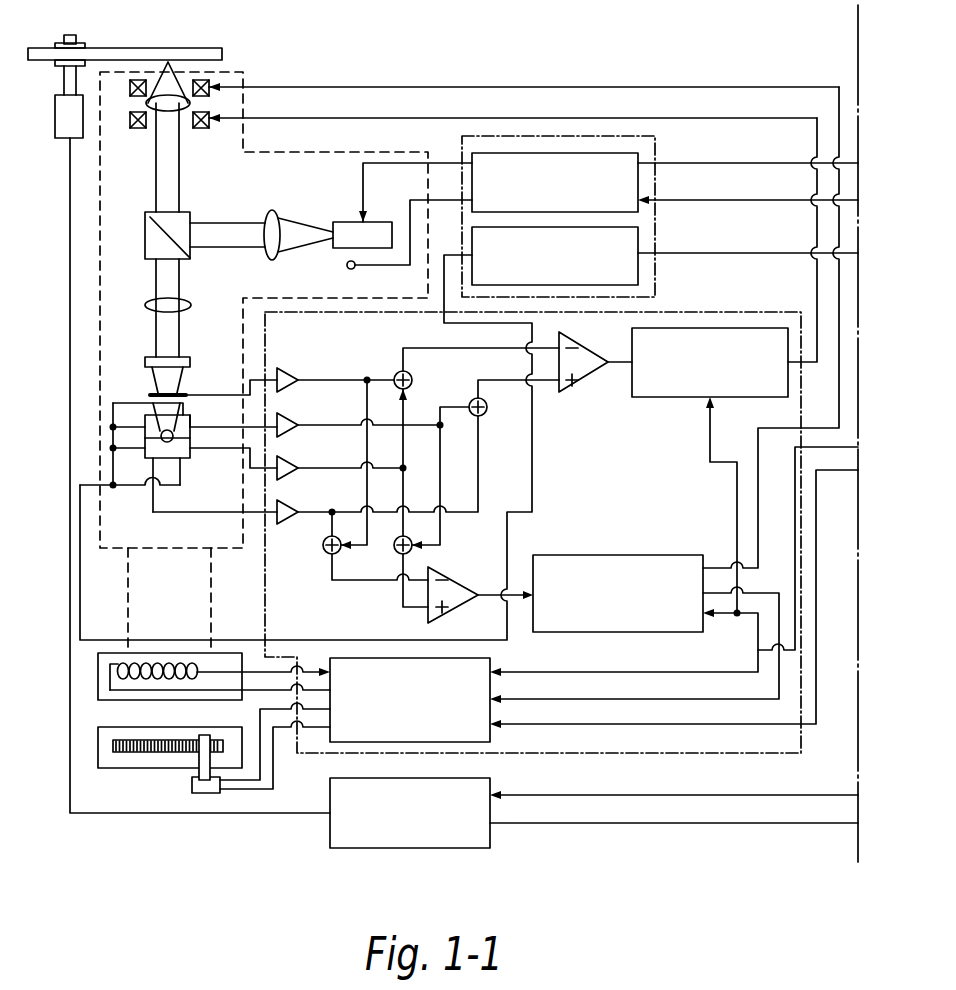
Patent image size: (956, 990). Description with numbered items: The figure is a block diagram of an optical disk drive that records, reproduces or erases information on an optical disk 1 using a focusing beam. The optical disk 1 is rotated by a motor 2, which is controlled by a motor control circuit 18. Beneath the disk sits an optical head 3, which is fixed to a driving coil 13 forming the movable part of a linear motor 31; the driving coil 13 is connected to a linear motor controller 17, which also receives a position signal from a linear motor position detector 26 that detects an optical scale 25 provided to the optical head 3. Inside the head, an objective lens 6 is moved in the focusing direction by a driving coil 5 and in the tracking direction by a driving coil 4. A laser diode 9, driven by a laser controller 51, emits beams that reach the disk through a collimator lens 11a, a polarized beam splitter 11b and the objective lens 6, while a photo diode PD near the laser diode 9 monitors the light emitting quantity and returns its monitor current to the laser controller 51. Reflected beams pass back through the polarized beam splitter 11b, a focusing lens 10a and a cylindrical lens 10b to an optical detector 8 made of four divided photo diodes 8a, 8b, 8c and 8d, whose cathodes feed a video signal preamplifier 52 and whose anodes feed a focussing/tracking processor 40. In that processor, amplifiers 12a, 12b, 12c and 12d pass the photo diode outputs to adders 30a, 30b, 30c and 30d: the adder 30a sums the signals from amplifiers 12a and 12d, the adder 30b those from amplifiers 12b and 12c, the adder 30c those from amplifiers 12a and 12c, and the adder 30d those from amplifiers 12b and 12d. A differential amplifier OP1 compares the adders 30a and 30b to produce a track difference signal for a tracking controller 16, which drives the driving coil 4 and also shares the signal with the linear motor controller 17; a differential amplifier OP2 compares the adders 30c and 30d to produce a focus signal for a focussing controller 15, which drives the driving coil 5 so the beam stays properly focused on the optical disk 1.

The optical disk 1 is at (152, 48).
The motor 2 is at (65, 138).
The optical head 3 is at (258, 153).
The driving coil 4 is at (209, 82).
The driving coil 5 is at (204, 128).
The objective lens 6 is at (168, 106).
The optical detector 8 is at (146, 440).
The photo diode 8a is at (146, 421).
The photo diode 8b is at (188, 420).
The photo diode 8c is at (178, 452).
The photo diode 8d is at (148, 462).
The laser diode 9 is at (341, 221).
The focusing lens 10a is at (152, 300).
The cylindrical lens 10b is at (152, 357).
The collimator lens 11a is at (268, 215).
The polarized beam splitter 11b is at (145, 222).
The amplifier 12a is at (288, 371).
The amplifier 12b is at (288, 416).
The amplifier 12c is at (288, 459).
The amplifier 12d is at (288, 503).
The driving coil 13 is at (116, 665).
The focussing controller 15 is at (689, 398).
The tracking controller 16 is at (601, 555).
The linear motor controller 17 is at (495, 664).
The motor control circuit 18 is at (330, 824).
The optical scale 25 is at (100, 758).
The linear motor position detector 26 is at (192, 785).
The adder 30a is at (325, 553).
The adder 30b is at (396, 556).
The adder 30c is at (413, 376).
The adder 30d is at (489, 416).
The linear motor 31 is at (100, 684).
The focussing/tracking processor 40 is at (583, 755).
The laser controller 51 is at (640, 157).
The video signal preamplifier 52 is at (640, 240).
The photo diode PD is at (347, 266).
The differential amplifier OP1 is at (462, 581).
The differential amplifier OP2 is at (580, 386).